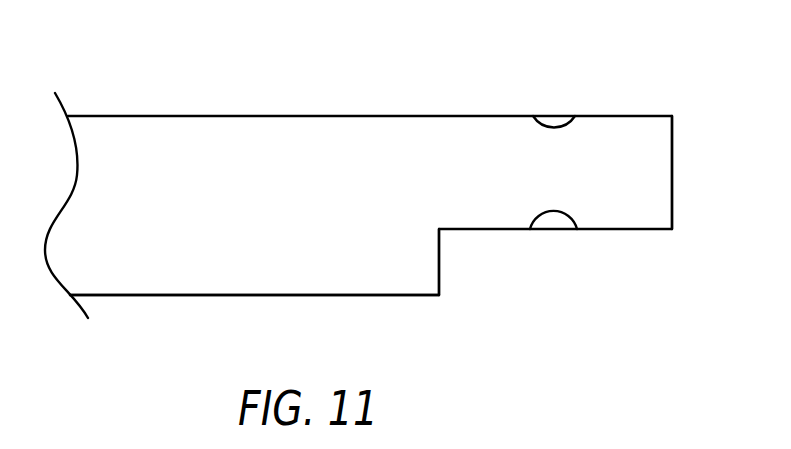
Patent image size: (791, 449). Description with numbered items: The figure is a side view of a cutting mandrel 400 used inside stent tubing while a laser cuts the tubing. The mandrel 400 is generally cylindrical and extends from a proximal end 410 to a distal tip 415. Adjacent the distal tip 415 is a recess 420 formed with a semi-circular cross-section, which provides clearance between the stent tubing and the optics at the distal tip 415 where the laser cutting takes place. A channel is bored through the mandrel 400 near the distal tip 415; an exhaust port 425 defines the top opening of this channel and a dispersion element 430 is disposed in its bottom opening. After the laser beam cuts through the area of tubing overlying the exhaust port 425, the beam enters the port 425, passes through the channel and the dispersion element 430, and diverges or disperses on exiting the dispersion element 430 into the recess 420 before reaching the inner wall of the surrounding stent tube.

The mandrel 400 is at (250, 72).
The proximal end 410 is at (243, 295).
The distal tip 415 is at (672, 172).
The recess 420 is at (489, 229).
The exhaust port 425 is at (552, 123).
The dispersion element 430 is at (553, 246).